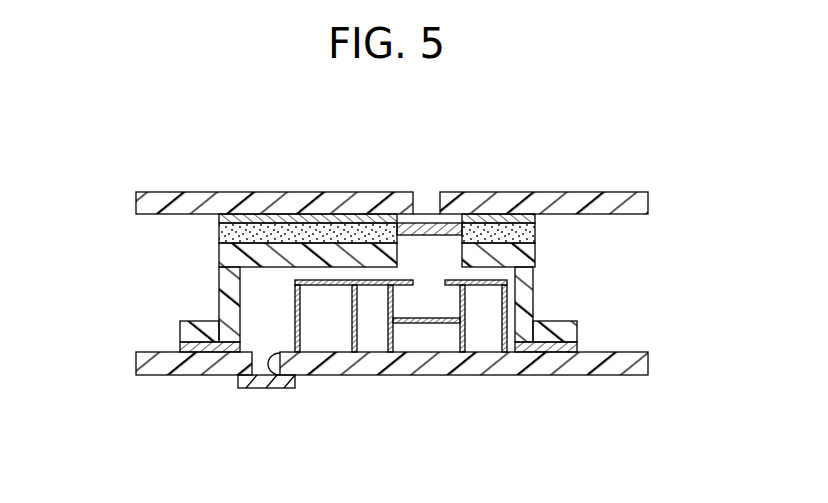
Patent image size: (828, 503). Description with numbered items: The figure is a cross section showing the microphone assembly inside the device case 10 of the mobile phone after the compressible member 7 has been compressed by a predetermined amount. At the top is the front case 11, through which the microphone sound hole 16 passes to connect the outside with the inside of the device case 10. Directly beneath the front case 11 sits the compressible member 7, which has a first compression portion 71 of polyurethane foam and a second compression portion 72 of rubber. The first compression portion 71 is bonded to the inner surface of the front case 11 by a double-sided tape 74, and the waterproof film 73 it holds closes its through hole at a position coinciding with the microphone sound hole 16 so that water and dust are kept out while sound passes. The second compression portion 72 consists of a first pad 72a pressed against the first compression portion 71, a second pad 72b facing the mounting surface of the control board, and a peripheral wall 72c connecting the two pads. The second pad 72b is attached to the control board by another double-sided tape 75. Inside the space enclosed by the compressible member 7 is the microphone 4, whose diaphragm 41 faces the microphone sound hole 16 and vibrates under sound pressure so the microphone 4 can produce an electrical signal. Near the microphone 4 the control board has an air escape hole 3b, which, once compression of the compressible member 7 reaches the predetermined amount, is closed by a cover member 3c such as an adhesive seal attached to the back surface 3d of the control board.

The compressible member 7 is at (83, 153).
The device case 10 is at (392, 161).
The front case 11 is at (327, 200).
The microphone sound hole 16 is at (424, 224).
The waterproof film 73 is at (429, 235).
The double-sided tape 74 is at (298, 219).
The first compression portion 71 is at (205, 233).
The second compression portion 72 is at (205, 272).
The first pad 72a is at (530, 258).
The second pad 72b is at (221, 337).
The peripheral wall 72c is at (222, 297).
The double-sided tape 75 is at (190, 347).
The back surface 3d is at (603, 377).
The cover member 3c is at (255, 389).
The air escape hole 3b is at (269, 381).
The microphone 4 is at (410, 344).
The diaphragm 41 is at (455, 324).